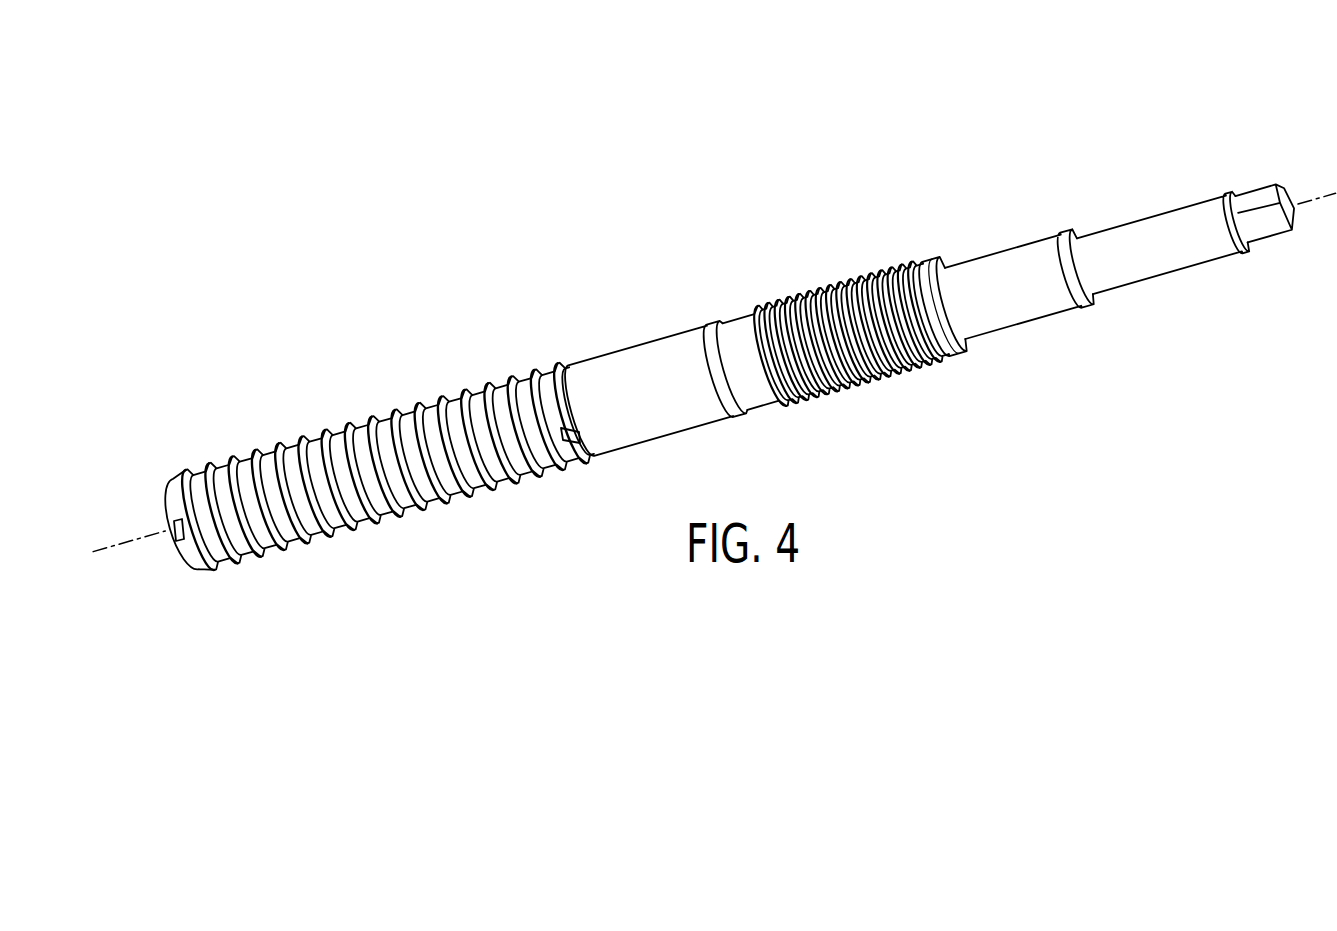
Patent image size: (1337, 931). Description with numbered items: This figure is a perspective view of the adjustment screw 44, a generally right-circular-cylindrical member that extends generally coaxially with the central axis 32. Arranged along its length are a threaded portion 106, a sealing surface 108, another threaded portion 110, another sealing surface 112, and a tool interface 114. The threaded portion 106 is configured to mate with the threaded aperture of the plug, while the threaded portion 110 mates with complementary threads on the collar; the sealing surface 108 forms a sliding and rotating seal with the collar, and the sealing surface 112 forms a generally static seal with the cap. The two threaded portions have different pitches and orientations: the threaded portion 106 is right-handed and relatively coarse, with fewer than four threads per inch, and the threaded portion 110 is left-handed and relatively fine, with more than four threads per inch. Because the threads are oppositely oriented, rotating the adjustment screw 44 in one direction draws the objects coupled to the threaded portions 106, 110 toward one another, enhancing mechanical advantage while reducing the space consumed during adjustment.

The adjustment screw 44 is at (1094, 115).
The central axis 32 is at (132, 540).
The threaded portion 106 is at (574, 349).
The sealing surface 108 is at (648, 356).
The threaded portion 110 is at (925, 251).
The sealing surface 112 is at (1037, 309).
The tool interface 114 is at (1260, 199).